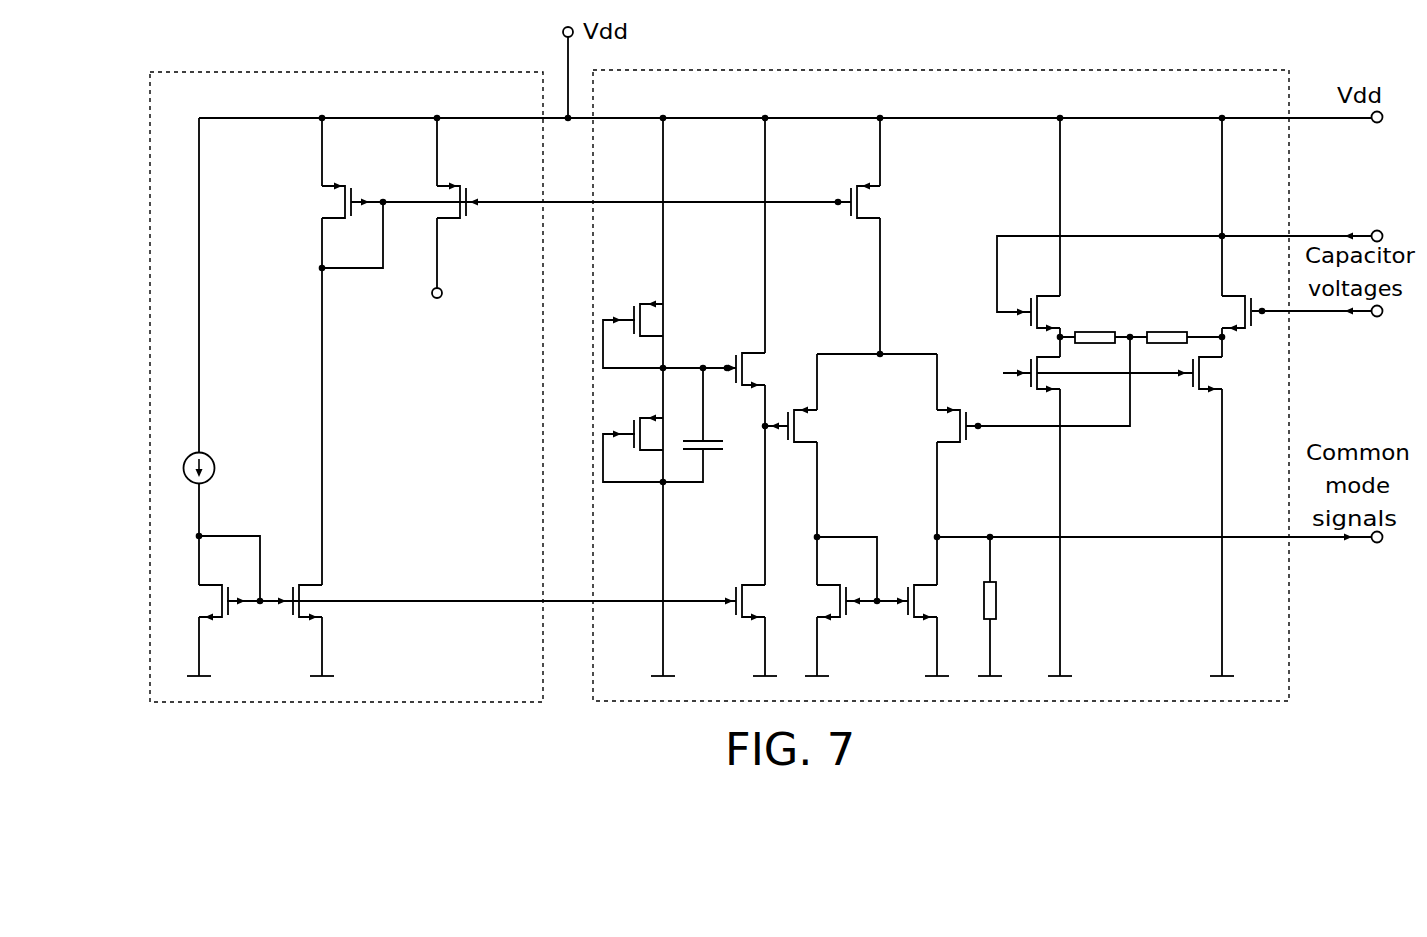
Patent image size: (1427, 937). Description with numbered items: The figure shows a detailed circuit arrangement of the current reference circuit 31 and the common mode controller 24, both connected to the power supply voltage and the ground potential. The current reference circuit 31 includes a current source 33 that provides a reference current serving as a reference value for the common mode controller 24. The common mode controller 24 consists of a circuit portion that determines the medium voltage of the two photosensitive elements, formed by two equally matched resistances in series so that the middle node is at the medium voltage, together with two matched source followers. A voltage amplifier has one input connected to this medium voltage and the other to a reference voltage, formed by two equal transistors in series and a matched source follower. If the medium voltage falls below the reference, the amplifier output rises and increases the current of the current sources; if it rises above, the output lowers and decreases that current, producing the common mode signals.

The current reference circuit 31 is at (222, 72).
The common mode controller 24 is at (825, 70).
The current source 33 is at (205, 452).